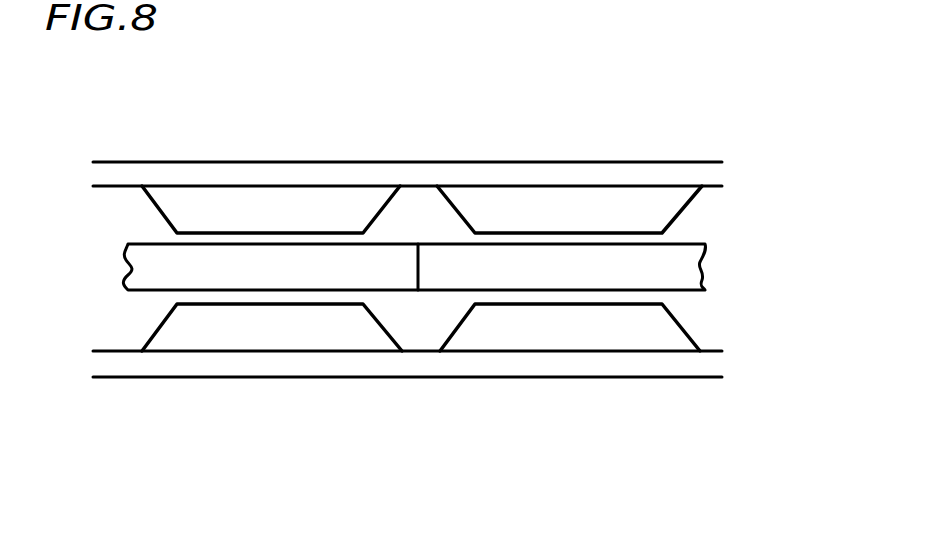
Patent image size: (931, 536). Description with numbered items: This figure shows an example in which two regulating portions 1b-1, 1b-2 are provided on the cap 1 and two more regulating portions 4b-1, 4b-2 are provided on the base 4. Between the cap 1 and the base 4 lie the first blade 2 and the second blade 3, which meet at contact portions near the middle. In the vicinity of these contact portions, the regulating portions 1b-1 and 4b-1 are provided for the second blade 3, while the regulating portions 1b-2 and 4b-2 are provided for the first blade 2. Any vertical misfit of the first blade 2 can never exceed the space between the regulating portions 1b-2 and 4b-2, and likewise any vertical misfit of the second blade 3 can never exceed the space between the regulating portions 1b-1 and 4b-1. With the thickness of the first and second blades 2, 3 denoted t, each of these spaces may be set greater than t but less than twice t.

The cap 1 is at (712, 175).
The regulating portion 1b-1 is at (270, 202).
The regulating portion 1b-2 is at (558, 200).
The first blade 2 is at (687, 267).
The second blade 3 is at (153, 258).
The base 4 is at (713, 364).
The regulating portion 4b-1 is at (262, 333).
The regulating portion 4b-2 is at (577, 330).